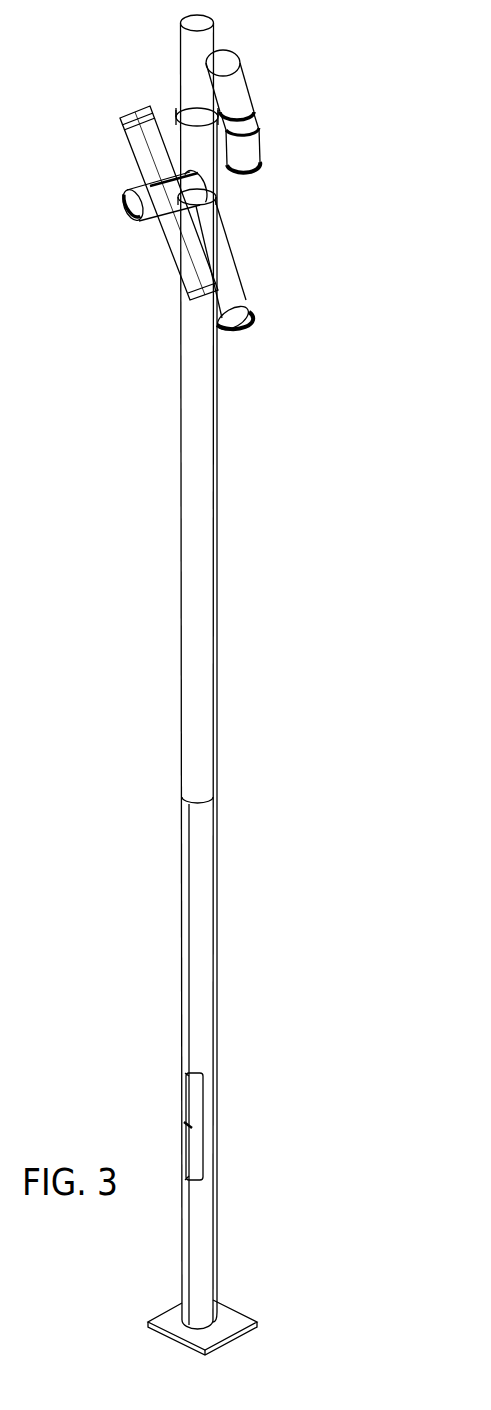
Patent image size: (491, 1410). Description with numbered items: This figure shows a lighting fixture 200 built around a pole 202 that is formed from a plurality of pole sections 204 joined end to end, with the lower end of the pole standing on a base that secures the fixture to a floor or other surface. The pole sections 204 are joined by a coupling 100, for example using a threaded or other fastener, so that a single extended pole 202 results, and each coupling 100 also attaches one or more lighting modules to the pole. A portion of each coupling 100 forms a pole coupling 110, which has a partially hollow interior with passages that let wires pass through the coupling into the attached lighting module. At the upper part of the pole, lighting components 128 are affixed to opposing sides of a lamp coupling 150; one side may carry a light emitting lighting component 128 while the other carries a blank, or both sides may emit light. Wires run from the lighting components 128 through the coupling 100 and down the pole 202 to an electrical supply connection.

The coupling 100 is at (178, 100).
The pole coupling 110 is at (185, 115).
The lighting component 128 is at (145, 150).
The lamp coupling 150 is at (255, 112).
The lighting fixture 200 is at (148, 1033).
The pole 202 is at (213, 387).
The pole section 204 is at (205, 35).